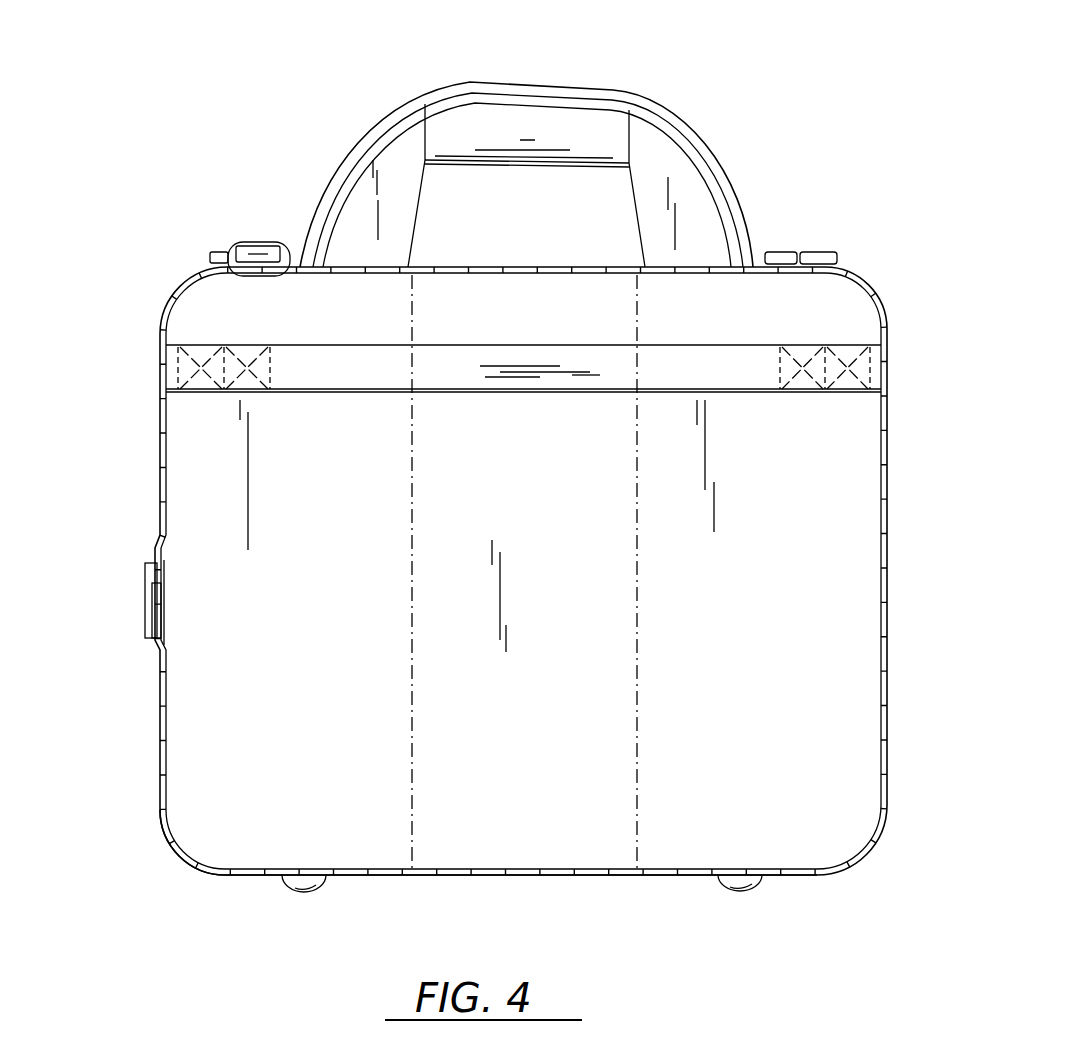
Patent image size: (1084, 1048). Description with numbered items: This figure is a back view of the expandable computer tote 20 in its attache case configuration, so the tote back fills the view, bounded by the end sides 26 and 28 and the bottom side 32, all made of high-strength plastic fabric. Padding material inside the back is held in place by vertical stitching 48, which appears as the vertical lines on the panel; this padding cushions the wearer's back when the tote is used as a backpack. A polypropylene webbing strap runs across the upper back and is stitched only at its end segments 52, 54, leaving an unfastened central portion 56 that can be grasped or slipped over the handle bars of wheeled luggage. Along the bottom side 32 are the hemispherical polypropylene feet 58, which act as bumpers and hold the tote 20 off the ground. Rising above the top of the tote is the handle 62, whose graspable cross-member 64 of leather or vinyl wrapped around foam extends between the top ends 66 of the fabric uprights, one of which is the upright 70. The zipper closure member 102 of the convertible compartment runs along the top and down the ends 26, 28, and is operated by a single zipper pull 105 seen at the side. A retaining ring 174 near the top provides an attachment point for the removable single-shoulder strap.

The expandable computer tote 20 is at (806, 97).
The end side 26 is at (882, 668).
The end side 28 is at (162, 490).
The bottom side 32 is at (510, 876).
The vertical stitching 48 is at (413, 538).
The end segment 52 is at (210, 358).
The end segment 54 is at (822, 356).
The central portion 56 is at (540, 393).
The feet 58 is at (308, 888).
The handle 62 is at (712, 218).
The cross-member 64 is at (592, 144).
The top ends 66 is at (377, 150).
The upright 70 is at (375, 240).
The zipper closure member 102 is at (164, 833).
The zipper pull 105 is at (148, 593).
The retaining ring 174 is at (234, 248).